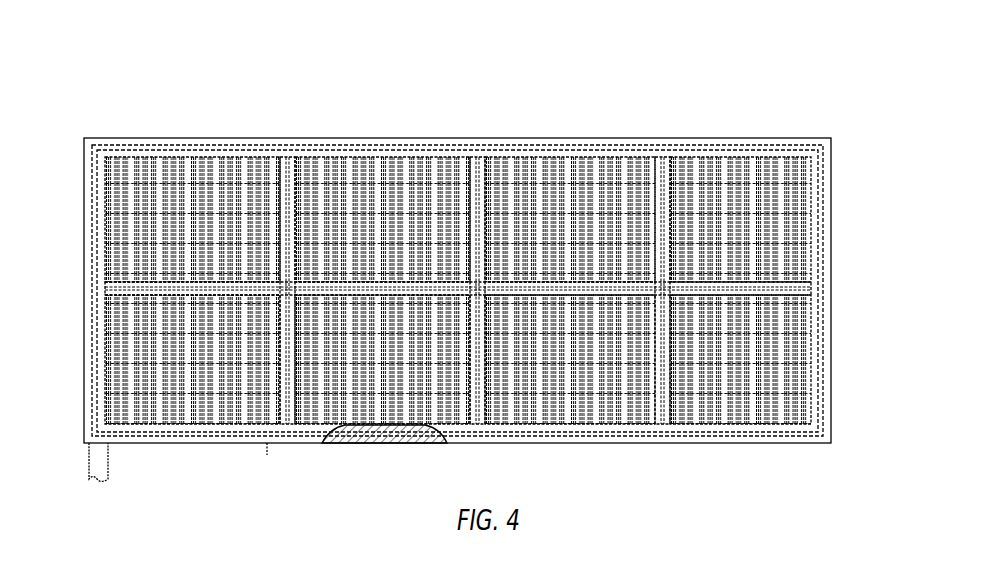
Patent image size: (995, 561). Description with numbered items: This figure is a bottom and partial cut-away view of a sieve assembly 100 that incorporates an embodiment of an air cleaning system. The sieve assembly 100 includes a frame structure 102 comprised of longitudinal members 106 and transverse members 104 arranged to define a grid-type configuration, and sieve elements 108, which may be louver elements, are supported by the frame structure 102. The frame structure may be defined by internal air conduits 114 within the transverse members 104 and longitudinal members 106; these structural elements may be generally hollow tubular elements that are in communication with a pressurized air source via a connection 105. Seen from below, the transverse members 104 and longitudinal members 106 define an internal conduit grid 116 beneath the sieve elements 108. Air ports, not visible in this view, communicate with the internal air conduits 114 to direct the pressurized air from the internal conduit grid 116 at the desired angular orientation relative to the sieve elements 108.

The sieve assembly 100 is at (652, 93).
The frame structure 102 is at (148, 137).
The transverse members 104 is at (490, 195).
The connection 105 is at (108, 465).
The longitudinal members 106 is at (405, 137).
The sieve elements 108 is at (770, 190).
The internal air conduits 114 is at (285, 185).
The internal conduit grid 116 is at (664, 192).